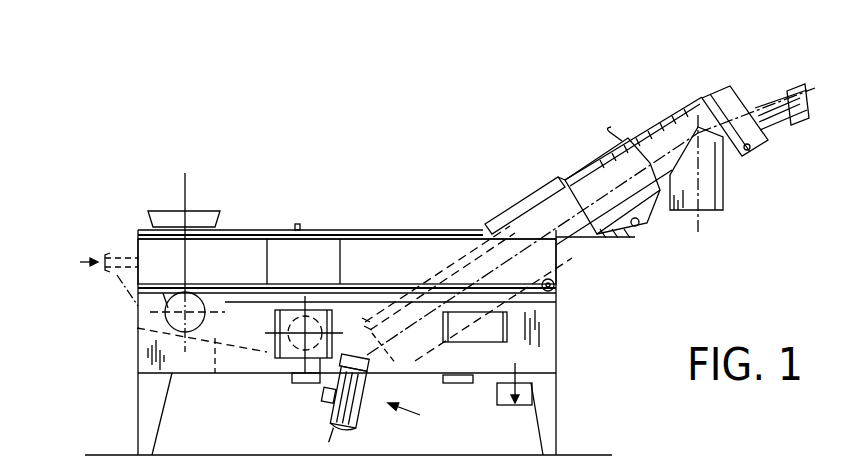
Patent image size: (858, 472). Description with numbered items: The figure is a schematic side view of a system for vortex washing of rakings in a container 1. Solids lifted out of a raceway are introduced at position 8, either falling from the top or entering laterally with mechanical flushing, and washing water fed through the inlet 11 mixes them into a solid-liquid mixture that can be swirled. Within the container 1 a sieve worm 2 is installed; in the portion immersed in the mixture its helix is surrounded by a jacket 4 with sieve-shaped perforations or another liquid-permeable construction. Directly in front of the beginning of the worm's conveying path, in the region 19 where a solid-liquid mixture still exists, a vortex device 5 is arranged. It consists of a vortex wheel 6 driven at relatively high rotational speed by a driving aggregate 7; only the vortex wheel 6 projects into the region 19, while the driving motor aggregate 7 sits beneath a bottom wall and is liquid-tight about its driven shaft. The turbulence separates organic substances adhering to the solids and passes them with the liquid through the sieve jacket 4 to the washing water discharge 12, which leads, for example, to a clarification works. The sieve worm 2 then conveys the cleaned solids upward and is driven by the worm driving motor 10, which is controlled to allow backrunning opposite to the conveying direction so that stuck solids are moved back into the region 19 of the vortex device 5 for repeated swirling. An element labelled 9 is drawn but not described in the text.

The container 1 is at (540, 355).
The sieve worm 2 is at (523, 217).
The jacket 4 is at (412, 348).
The vortex device 5 is at (415, 418).
The vortex wheel 6 is at (367, 372).
The driving aggregate 7 is at (328, 422).
The solids introduction position 8 is at (198, 216).
The pump 9 is at (280, 326).
The worm driving motor 10 is at (773, 105).
The inlet 11 is at (115, 250).
The washing water discharge 12 is at (530, 397).
The region 19 is at (362, 356).